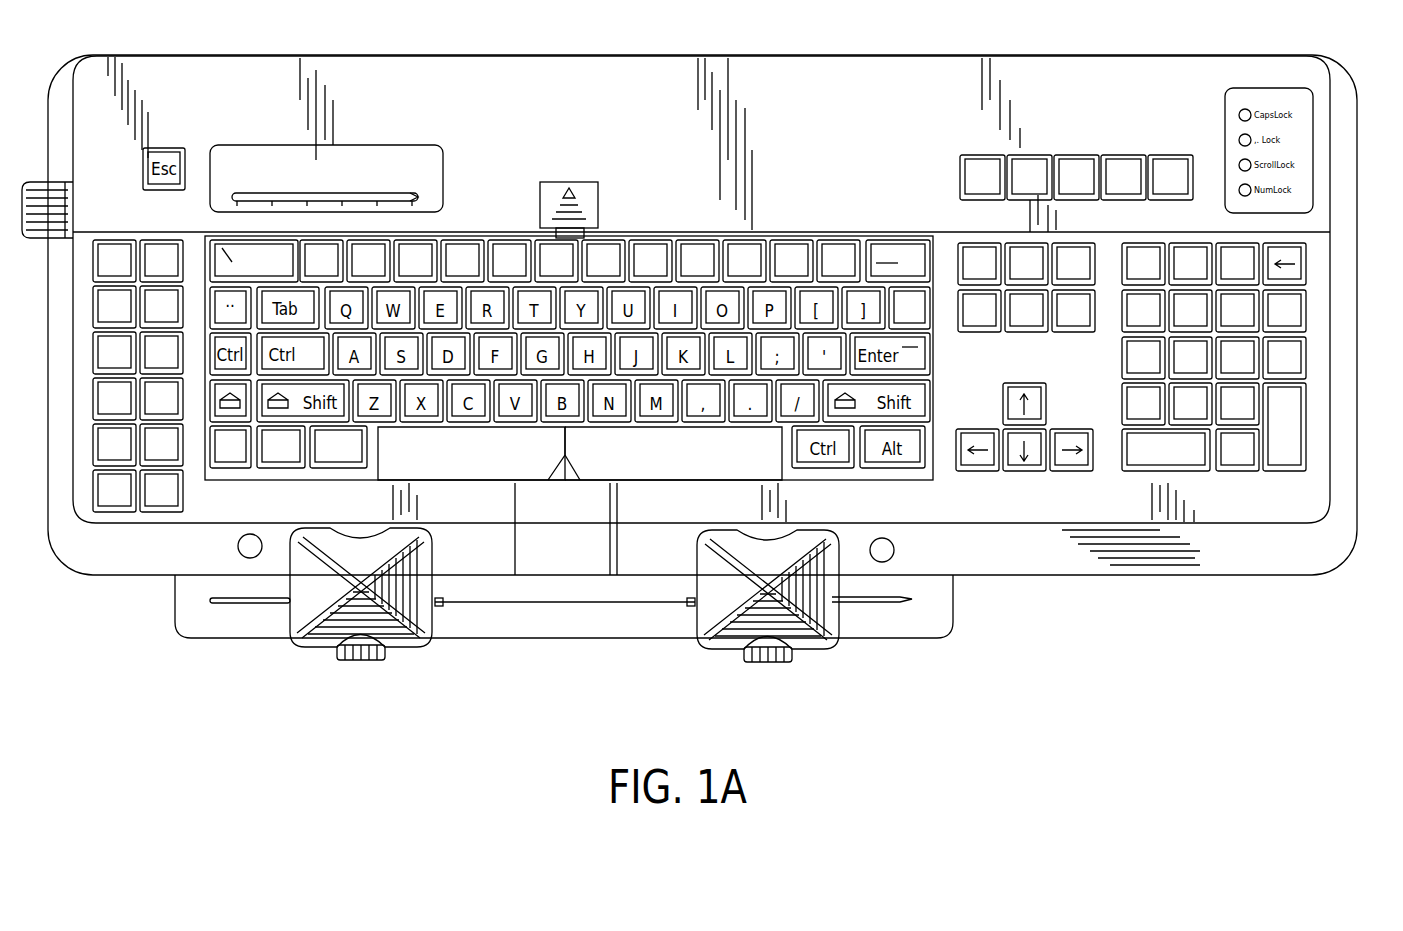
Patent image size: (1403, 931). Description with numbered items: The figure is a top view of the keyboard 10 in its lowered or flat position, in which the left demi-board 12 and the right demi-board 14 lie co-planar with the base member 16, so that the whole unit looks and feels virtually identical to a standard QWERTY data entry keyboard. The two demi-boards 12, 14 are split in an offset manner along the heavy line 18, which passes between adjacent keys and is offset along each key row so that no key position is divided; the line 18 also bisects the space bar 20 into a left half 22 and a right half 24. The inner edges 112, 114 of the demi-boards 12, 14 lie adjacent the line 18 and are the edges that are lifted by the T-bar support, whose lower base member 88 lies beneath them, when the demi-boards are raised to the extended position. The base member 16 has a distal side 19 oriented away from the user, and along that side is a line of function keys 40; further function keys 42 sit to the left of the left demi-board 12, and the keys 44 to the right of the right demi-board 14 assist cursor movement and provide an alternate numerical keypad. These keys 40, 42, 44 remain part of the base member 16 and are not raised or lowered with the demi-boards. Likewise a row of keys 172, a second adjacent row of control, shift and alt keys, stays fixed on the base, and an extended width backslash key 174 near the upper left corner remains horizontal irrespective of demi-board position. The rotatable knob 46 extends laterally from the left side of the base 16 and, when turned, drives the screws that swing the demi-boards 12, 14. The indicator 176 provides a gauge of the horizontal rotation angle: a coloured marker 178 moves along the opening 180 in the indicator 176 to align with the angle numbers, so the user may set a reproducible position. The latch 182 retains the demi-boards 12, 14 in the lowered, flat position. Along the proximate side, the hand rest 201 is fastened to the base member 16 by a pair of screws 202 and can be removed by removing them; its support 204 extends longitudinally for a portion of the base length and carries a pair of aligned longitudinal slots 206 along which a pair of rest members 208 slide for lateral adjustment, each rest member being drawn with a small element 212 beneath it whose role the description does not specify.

The keyboard 10 is at (484, 46).
The left demi-board 12 is at (238, 470).
The right demi-board 14 is at (908, 478).
The base member 16 is at (875, 55).
The heavy line 18 is at (538, 243).
The distal side 19 is at (317, 55).
The space bar 20 is at (638, 483).
The left half 22 is at (442, 466).
The right half 24 is at (730, 466).
The function keys 40 is at (1082, 144).
The function keys 42 is at (70, 378).
The keys 44 is at (1328, 342).
The rotatable knob 46 is at (18, 190).
The lower base member 88 is at (567, 553).
The inner edge 112 is at (606, 416).
The inner edge 114 is at (568, 424).
The row of keys 172 is at (200, 432).
The extended width backslash key 174 is at (243, 258).
The indicator 176 is at (392, 157).
The coloured marker 178 is at (246, 196).
The opening 180 is at (420, 197).
The latch 182 is at (593, 203).
The hand rest 201 is at (952, 655).
The screws 202 is at (240, 556).
The support 204 is at (497, 642).
The longitudinal slots 206 is at (240, 605).
The rest members 208 is at (323, 648).
The screw 212 is at (368, 661).